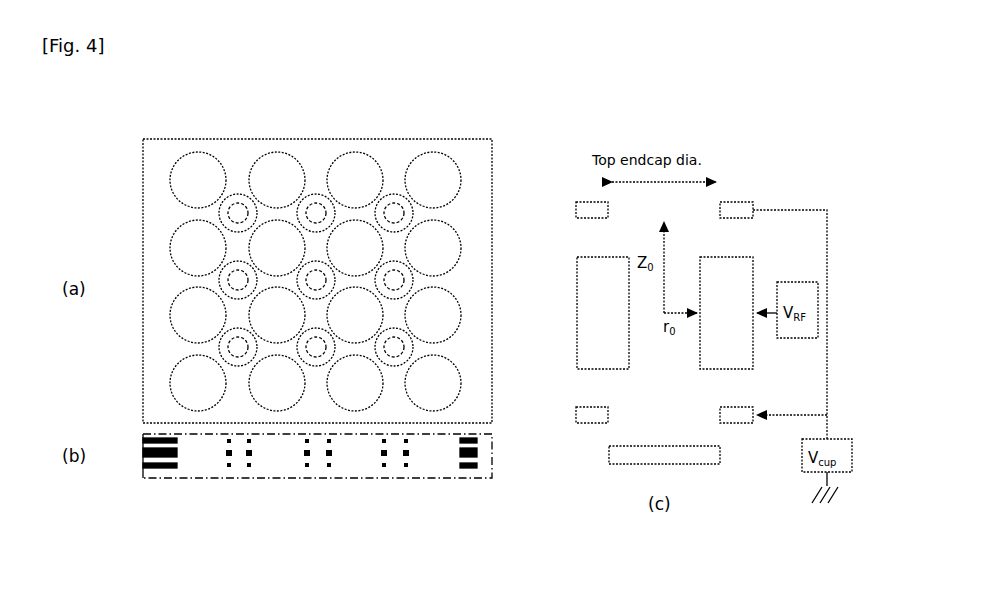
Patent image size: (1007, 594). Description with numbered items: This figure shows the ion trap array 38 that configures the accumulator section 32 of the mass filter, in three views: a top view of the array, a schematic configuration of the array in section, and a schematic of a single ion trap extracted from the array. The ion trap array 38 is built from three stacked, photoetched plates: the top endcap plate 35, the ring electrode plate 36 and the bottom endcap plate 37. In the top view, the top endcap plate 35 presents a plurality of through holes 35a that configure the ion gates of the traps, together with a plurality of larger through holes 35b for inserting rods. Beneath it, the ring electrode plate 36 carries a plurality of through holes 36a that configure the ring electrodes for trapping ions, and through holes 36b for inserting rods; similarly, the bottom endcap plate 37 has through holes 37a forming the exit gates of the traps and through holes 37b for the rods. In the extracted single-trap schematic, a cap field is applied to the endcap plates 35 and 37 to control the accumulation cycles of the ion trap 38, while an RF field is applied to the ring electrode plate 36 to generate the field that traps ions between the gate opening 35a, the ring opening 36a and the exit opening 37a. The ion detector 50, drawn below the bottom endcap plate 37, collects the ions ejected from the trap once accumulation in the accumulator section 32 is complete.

The accumulator section 32 is at (139, 213).
The top endcap plate 35 is at (155, 153).
The through holes 35a is at (233, 194).
The through holes 35b is at (193, 173).
The ring electrode plate 36 is at (143, 452).
The through holes 36a is at (239, 192).
The through holes 36b is at (178, 452).
The bottom endcap plate 37 is at (143, 467).
The through holes 37a is at (306, 466).
The through holes 37b is at (178, 467).
The ion trap array 38 is at (457, 482).
The ion detector 50 is at (613, 455).